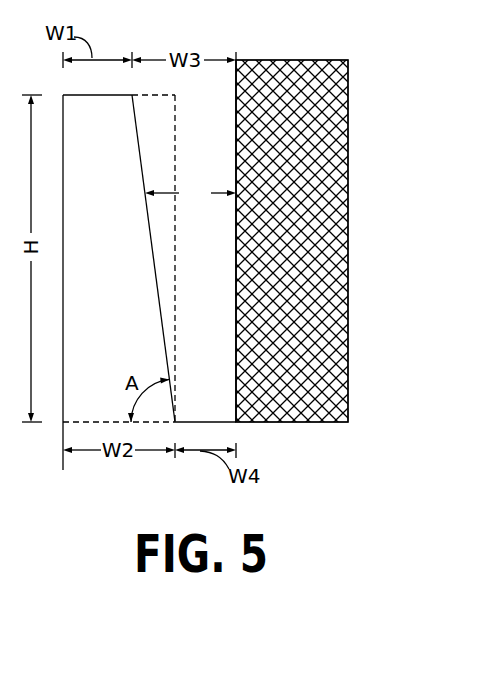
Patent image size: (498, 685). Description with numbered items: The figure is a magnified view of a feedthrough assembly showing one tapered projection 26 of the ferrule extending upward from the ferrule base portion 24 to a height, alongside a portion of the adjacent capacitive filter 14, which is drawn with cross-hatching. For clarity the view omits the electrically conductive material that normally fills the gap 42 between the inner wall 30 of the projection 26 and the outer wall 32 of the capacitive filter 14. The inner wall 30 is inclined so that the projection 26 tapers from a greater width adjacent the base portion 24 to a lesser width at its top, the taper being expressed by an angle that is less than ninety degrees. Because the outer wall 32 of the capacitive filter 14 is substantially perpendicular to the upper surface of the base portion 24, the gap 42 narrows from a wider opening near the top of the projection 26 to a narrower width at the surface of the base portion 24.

The capacitive filter 14 is at (341, 191).
The base portion 24 is at (63, 462).
The projection 26 is at (113, 296).
The inner wall 30 is at (146, 150).
The outer wall 32 is at (230, 290).
The gap 42 is at (190, 193).